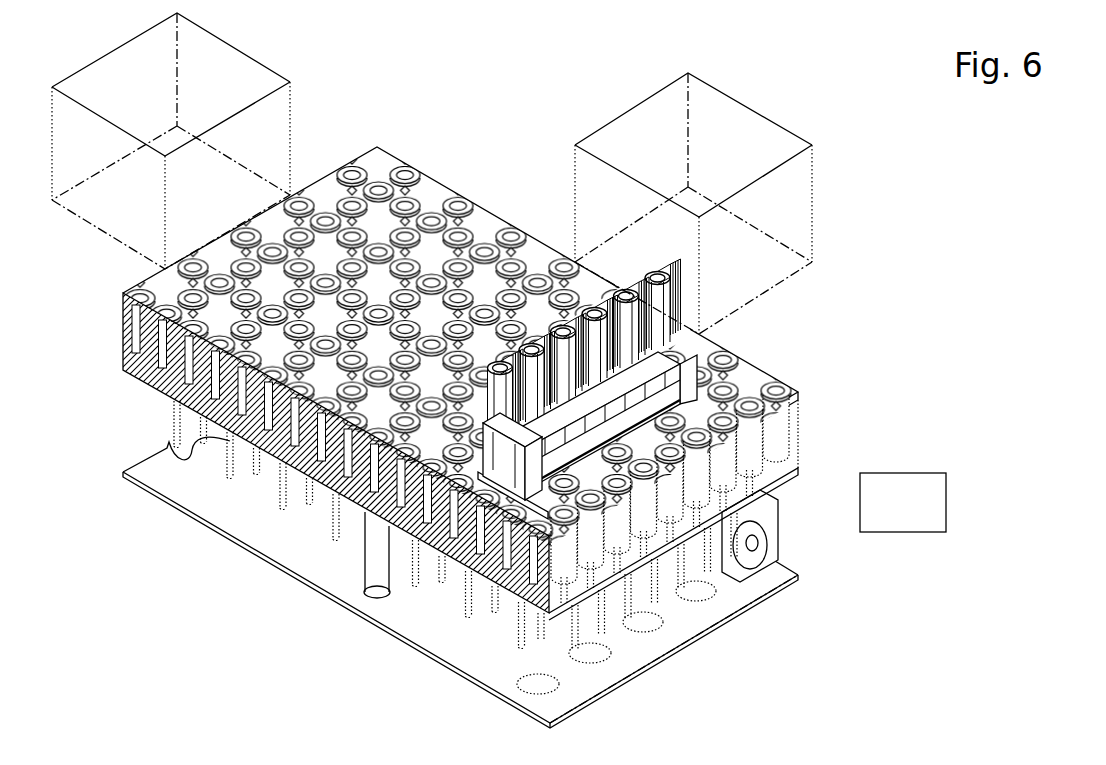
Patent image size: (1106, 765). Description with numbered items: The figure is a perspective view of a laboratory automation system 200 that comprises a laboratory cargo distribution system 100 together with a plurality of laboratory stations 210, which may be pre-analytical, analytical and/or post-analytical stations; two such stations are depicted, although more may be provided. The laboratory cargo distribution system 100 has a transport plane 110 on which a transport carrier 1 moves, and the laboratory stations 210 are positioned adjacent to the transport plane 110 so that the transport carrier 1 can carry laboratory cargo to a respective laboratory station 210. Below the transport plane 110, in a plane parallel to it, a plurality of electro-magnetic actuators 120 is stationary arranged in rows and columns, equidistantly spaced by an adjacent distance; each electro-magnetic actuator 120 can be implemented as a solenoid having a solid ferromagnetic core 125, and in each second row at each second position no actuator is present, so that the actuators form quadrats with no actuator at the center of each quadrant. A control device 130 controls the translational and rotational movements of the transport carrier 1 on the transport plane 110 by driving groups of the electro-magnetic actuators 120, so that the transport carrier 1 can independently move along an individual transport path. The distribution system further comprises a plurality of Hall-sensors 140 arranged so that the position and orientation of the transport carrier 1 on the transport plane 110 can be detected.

The transport carrier 1 is at (698, 366).
The laboratory cargo distribution system 100 is at (198, 561).
The transport plane 110 is at (746, 378).
The electro-magnetic actuator 120 is at (527, 558).
The solid ferromagnetic core 125 is at (518, 578).
The control device 130 is at (923, 512).
The Hall-sensor 140 is at (512, 255).
The laboratory automation system 200 is at (474, 652).
The laboratory station 210 is at (242, 78).